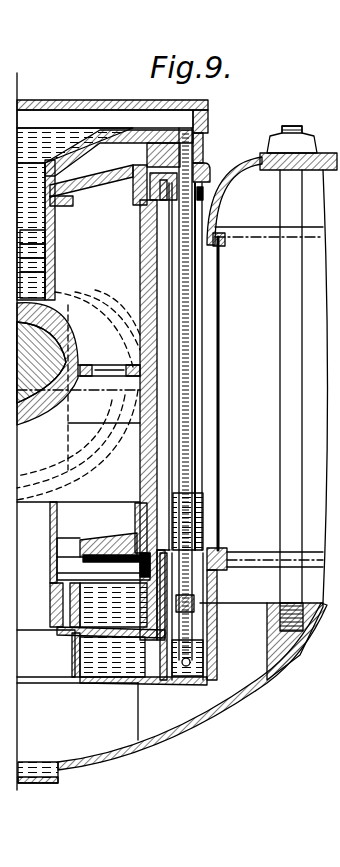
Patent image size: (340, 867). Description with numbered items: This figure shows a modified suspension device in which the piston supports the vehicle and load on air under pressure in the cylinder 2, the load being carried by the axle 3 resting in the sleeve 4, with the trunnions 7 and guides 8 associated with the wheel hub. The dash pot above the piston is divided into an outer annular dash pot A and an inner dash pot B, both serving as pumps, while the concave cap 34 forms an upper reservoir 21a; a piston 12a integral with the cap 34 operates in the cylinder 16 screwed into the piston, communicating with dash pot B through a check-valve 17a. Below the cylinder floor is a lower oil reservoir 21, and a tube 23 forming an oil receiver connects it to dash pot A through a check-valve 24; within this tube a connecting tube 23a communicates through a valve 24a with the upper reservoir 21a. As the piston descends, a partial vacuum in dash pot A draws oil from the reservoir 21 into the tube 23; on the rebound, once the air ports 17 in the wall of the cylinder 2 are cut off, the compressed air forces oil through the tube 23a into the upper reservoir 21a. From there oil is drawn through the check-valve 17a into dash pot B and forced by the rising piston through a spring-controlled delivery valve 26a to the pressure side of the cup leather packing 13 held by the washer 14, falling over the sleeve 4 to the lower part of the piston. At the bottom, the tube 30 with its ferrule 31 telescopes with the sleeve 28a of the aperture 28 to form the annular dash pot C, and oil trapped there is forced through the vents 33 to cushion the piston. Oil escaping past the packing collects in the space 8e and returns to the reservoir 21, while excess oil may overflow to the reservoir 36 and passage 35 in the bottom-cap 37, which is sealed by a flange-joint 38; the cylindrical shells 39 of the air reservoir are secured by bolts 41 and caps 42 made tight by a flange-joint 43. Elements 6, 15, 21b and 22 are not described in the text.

The cylinder 2 is at (210, 168).
The axle 3 is at (76, 388).
The sleeve 4 is at (76, 353).
The bevel gear 6 is at (40, 311).
The trunnions 7 is at (104, 460).
The guides 8 is at (70, 426).
The space 8e is at (42, 465).
The piston 12a is at (55, 181).
The cup leather packing 13 is at (128, 553).
The washer 14 is at (98, 565).
The ring 15 is at (137, 510).
The cylinder 16 is at (55, 234).
The air ports 17 is at (136, 208).
The check-valve 17a is at (47, 249).
The oil reservoir 21 is at (106, 665).
The upper reservoir 21a is at (105, 205).
The top plate 21b is at (109, 100).
The chamber 22 is at (46, 653).
The tube or conduit 23 is at (197, 385).
The tube 23a is at (195, 438).
The check-valve 24 is at (218, 652).
The valve 24a is at (200, 607).
The spring-controlled delivery valve 26a is at (50, 274).
The aperture 28 is at (80, 550).
The sleeve 28a is at (68, 543).
The tube 30 is at (83, 583).
The ferrule 31 is at (50, 528).
The vents 33 is at (64, 596).
The cap 34 is at (158, 136).
The passage 35 is at (228, 635).
The passage or reservoir 36 is at (77, 711).
The bottom-cap 37 is at (207, 722).
The flange-joint 38 is at (143, 679).
The cylindrical shells 39 is at (221, 272).
The bolts 41 is at (293, 197).
The caps 42 is at (221, 201).
The flange-joint 43 is at (222, 240).
The outer annular dash pot A is at (153, 155).
The inner dash pot B is at (48, 263).
The annular dash pot C is at (113, 605).